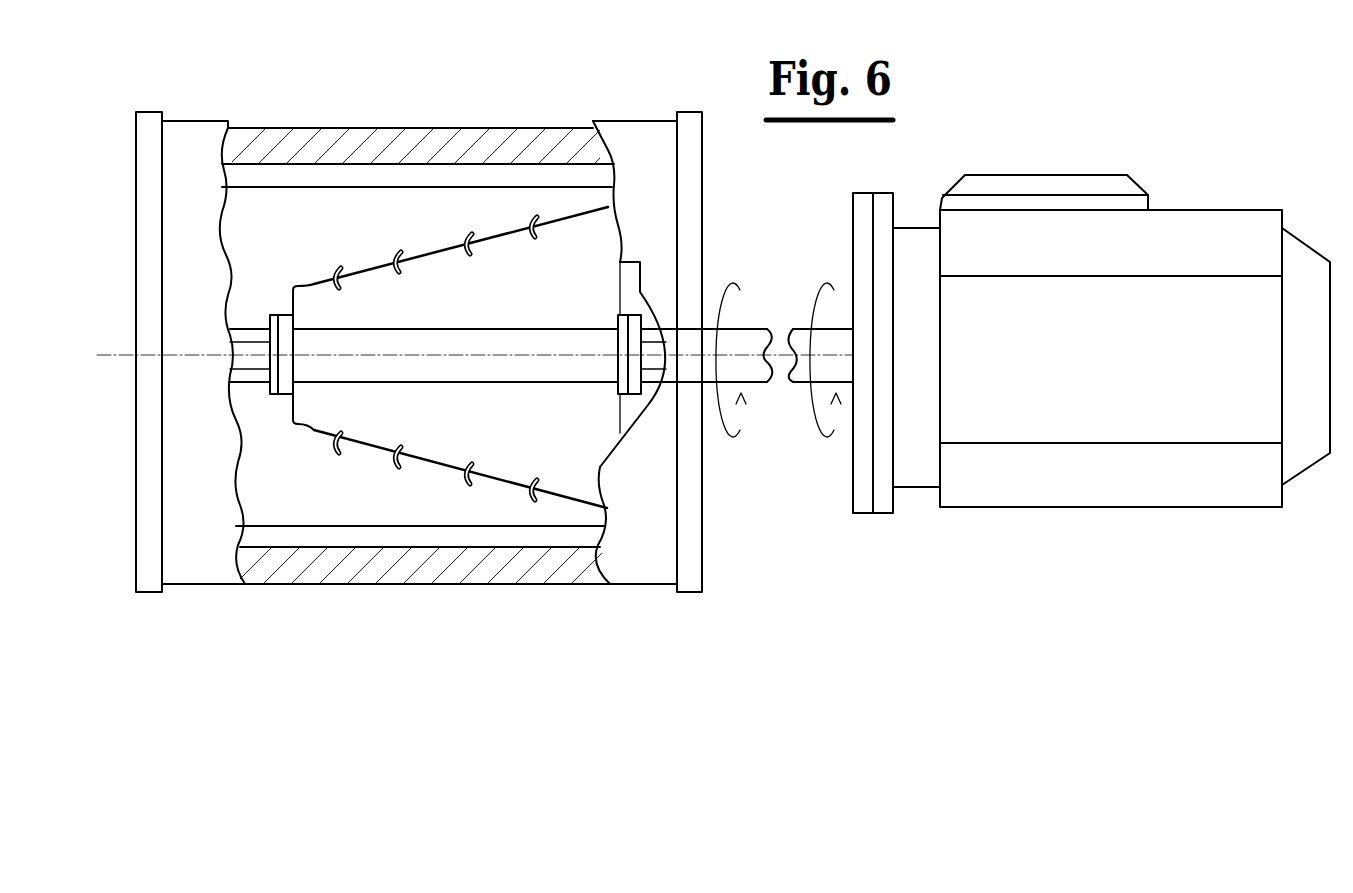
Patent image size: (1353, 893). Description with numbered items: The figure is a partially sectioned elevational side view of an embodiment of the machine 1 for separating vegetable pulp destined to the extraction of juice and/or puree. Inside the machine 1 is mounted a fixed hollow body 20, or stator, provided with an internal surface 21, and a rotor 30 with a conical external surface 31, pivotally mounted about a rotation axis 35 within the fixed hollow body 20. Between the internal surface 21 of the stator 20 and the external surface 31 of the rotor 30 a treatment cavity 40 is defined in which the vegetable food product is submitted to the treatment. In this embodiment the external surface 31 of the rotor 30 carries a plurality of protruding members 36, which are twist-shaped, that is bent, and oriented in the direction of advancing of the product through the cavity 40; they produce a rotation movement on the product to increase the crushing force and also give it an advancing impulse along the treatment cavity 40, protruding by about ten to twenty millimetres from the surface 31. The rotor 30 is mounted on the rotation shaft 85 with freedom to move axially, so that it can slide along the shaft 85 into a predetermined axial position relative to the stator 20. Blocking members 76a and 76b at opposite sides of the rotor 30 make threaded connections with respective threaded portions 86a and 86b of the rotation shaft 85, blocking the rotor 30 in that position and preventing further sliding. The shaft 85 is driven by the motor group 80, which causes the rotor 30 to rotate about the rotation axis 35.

The machine 1 is at (231, 80).
The fixed hollow body 20 is at (287, 200).
The internal surface 21 is at (322, 194).
The rotor 30 is at (435, 242).
The external surface 31 is at (312, 442).
The rotation axis 35 is at (112, 349).
The protruding members 36 is at (384, 250).
The treatment cavity 40 is at (316, 500).
The first bearing 76a is at (260, 392).
The second bearing 76b is at (641, 316).
The motor 80 is at (1232, 196).
The rotation shaft 85 is at (809, 389).
The threaded portion 86a is at (244, 333).
The threaded portion 86b is at (650, 390).